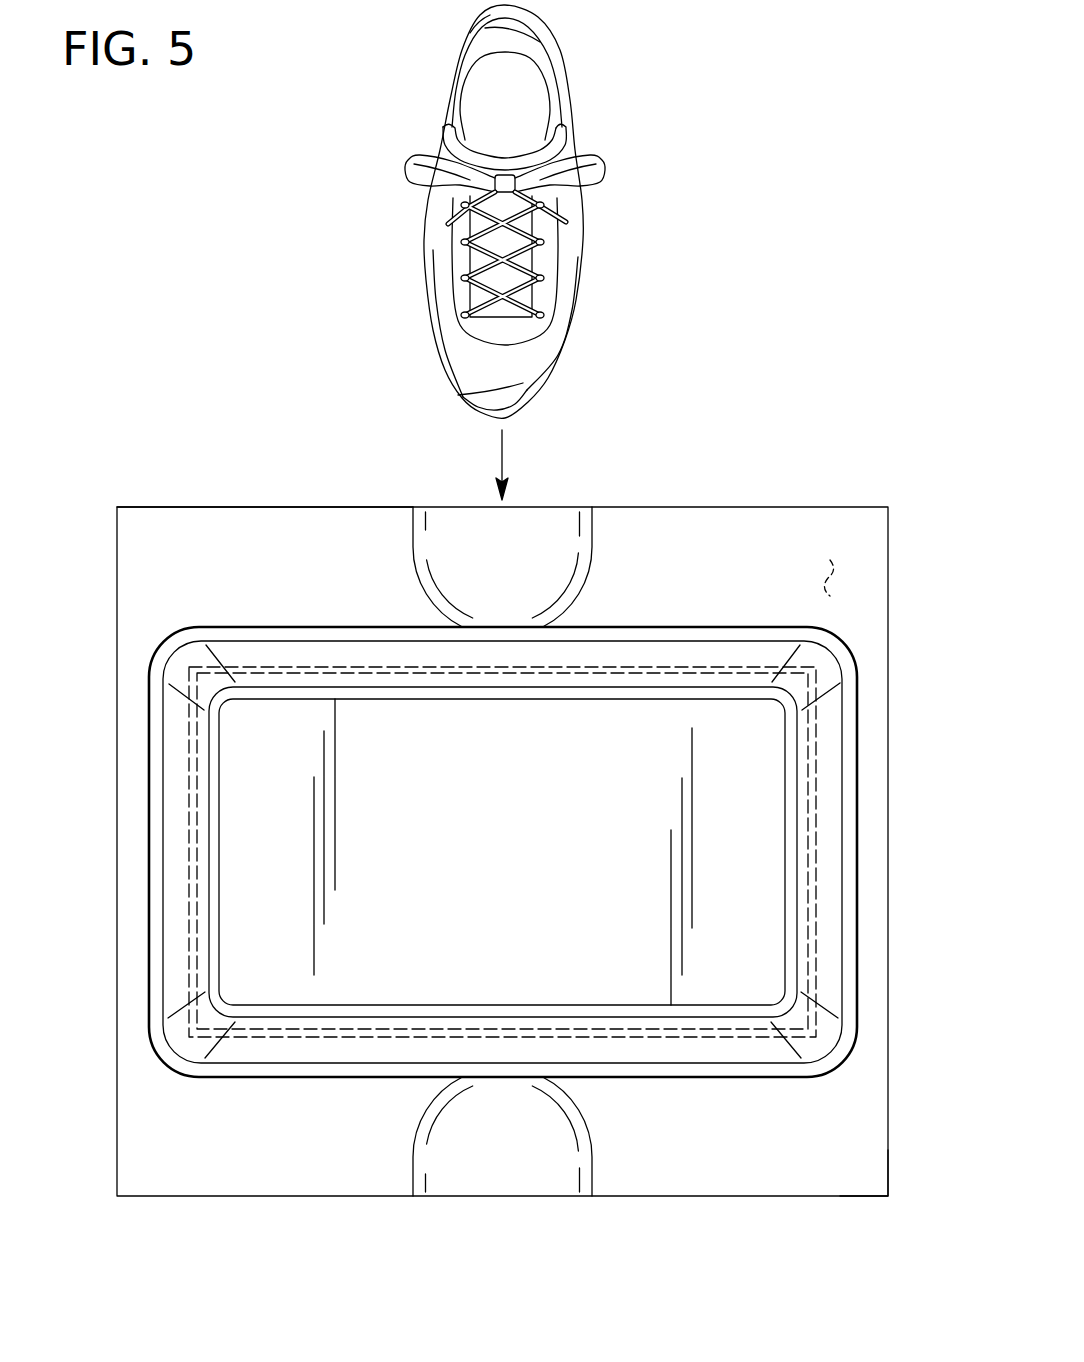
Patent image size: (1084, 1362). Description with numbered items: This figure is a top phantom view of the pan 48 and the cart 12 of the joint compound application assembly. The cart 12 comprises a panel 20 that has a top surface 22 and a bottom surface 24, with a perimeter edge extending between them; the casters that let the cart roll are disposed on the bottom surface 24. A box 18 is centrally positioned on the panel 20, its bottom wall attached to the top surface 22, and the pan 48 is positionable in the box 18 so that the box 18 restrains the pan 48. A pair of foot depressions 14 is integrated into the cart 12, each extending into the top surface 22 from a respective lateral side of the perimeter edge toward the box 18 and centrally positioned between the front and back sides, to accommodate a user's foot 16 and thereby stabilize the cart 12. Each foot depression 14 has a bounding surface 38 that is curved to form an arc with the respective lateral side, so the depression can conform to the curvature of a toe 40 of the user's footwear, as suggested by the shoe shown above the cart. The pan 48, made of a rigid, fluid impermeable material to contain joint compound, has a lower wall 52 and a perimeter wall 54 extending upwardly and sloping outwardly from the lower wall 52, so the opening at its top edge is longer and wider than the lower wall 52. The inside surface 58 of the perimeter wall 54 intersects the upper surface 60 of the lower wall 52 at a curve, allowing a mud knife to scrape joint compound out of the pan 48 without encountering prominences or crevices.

The cart 12 is at (812, 492).
The foot depressions 14 is at (540, 552).
The user's foot 16 is at (517, 211).
The box 18 is at (190, 728).
The panel 20 is at (889, 1206).
The top surface 22 is at (292, 532).
The bottom surface 24 is at (840, 578).
The bounding surface 38 is at (424, 528).
The toe 40 is at (465, 405).
The pan 48 is at (148, 853).
The lower wall 52 is at (748, 852).
The perimeter wall 54 is at (737, 1042).
The inside surface 58 is at (826, 760).
The upper surface 60 is at (708, 726).